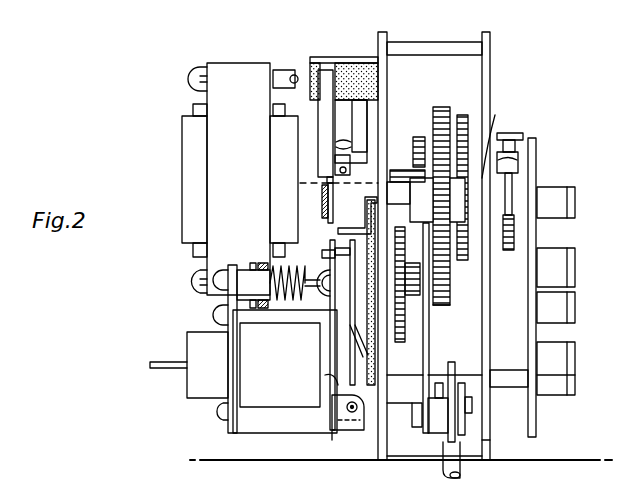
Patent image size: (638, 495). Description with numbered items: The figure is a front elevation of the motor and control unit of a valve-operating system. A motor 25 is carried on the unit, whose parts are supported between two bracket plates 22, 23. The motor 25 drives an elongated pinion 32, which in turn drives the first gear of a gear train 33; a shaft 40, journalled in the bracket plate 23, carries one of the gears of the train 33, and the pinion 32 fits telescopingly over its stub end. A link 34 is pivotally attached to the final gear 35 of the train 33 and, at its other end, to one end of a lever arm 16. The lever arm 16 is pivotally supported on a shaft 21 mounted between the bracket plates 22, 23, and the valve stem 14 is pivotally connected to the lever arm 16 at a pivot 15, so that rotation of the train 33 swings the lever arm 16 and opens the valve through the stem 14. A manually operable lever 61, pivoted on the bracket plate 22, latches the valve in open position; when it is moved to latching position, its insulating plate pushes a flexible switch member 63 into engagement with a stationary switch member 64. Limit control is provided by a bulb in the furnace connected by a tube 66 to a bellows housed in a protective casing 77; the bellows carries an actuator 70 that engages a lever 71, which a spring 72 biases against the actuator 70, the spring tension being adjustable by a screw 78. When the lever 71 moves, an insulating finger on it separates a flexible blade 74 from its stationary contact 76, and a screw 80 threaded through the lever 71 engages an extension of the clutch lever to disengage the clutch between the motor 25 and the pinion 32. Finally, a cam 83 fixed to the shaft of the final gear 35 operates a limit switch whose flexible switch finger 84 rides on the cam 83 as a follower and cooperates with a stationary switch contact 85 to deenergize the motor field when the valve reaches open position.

The stem 14 is at (461, 474).
The pivotal connection 15 is at (466, 418).
The lever arm 16 is at (452, 362).
The shaft 21 is at (402, 398).
The bracket plate 22 is at (388, 447).
The bracket plate 23 is at (491, 440).
The motor 25 is at (172, 152).
The elongated pinion 32 is at (400, 168).
The gear train 33 is at (431, 97).
The link 34 is at (432, 341).
The final gear 35 is at (443, 306).
The shaft 40 is at (501, 140).
The manually operable lever 61 is at (334, 192).
The flexible switch member 63 is at (318, 138).
The stationary switch member 64 is at (360, 118).
The tube 66 is at (170, 368).
The actuator 70 is at (333, 378).
The lever 71 is at (330, 316).
The spring 72 is at (290, 308).
The flexible blade 74 is at (356, 326).
The stationary contact 76 is at (357, 215).
The protective casing 77 is at (292, 410).
The screw 78 is at (225, 296).
The screw 80 is at (322, 252).
The cam 83 is at (513, 258).
The flexible switch finger 84 is at (520, 178).
The stationary switch contact 85 is at (516, 133).